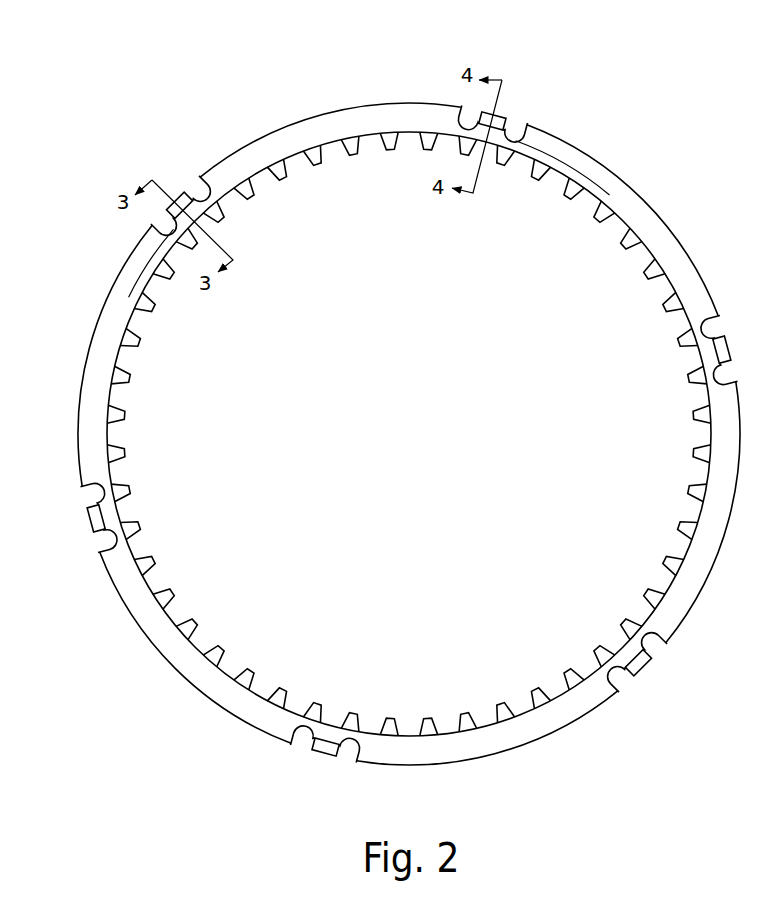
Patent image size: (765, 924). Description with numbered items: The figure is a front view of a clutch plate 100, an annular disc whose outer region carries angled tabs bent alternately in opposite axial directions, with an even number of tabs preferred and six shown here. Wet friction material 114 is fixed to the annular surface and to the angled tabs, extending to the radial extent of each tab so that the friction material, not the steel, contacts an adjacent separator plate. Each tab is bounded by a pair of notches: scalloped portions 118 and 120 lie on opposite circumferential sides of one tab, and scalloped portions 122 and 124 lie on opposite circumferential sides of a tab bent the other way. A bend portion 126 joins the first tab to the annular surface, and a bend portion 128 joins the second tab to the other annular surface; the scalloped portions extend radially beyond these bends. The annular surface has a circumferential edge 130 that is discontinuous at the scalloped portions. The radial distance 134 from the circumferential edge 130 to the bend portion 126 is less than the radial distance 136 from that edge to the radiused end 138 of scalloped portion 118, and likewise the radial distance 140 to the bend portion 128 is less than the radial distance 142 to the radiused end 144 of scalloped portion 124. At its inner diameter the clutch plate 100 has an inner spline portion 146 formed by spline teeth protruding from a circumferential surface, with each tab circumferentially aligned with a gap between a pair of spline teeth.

The clutch plate 100 is at (579, 107).
The wet friction material 114 is at (277, 143).
The scalloped portion 118 is at (154, 223).
The scalloped portion 120 is at (202, 181).
The scalloped portion 122 is at (466, 111).
The scalloped portion 124 is at (516, 124).
The bend portion 126 is at (180, 194).
The bend portion 128 is at (498, 118).
The circumferential edge 130 is at (338, 101).
The radial distance 134 is at (147, 247).
The radial distance 136 is at (134, 285).
The radiused end 138 is at (177, 246).
The radial distance 140 is at (553, 146).
The radial distance 142 is at (593, 184).
The radiused end 144 is at (507, 149).
The inner spline portion 146 is at (164, 592).